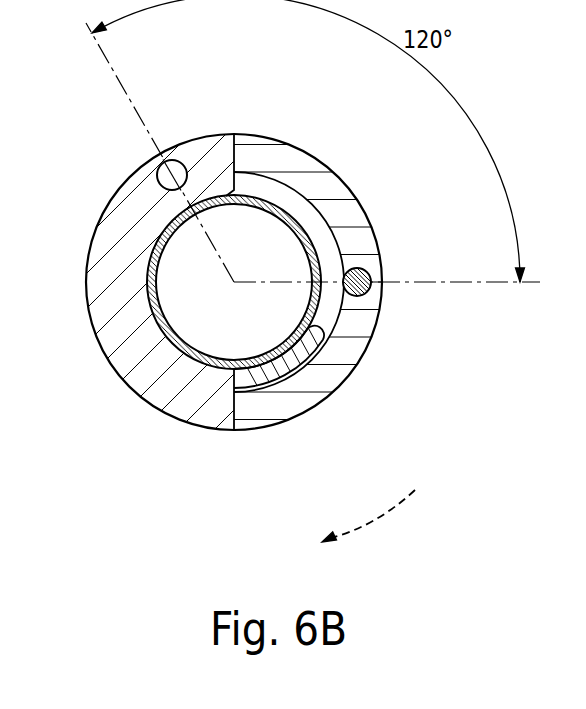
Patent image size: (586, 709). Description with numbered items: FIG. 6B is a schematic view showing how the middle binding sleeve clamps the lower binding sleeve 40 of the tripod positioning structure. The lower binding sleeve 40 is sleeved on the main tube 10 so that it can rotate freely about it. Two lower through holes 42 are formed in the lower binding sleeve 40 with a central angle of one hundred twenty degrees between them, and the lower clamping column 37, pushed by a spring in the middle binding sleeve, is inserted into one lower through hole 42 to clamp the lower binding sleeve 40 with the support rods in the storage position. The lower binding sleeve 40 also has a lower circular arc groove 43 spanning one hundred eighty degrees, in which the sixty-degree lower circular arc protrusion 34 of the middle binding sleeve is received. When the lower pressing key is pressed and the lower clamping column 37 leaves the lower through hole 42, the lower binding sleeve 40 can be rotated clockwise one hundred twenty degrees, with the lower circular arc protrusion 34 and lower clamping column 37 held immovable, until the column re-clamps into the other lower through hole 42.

The main tube 10 is at (150, 307).
The lower circular arc protrusion 34 is at (300, 350).
The lower clamping column 37 is at (362, 270).
The lower binding sleeve 40 is at (317, 415).
The lower through holes 42 is at (158, 183).
The lower circular arc groove 43 is at (275, 192).